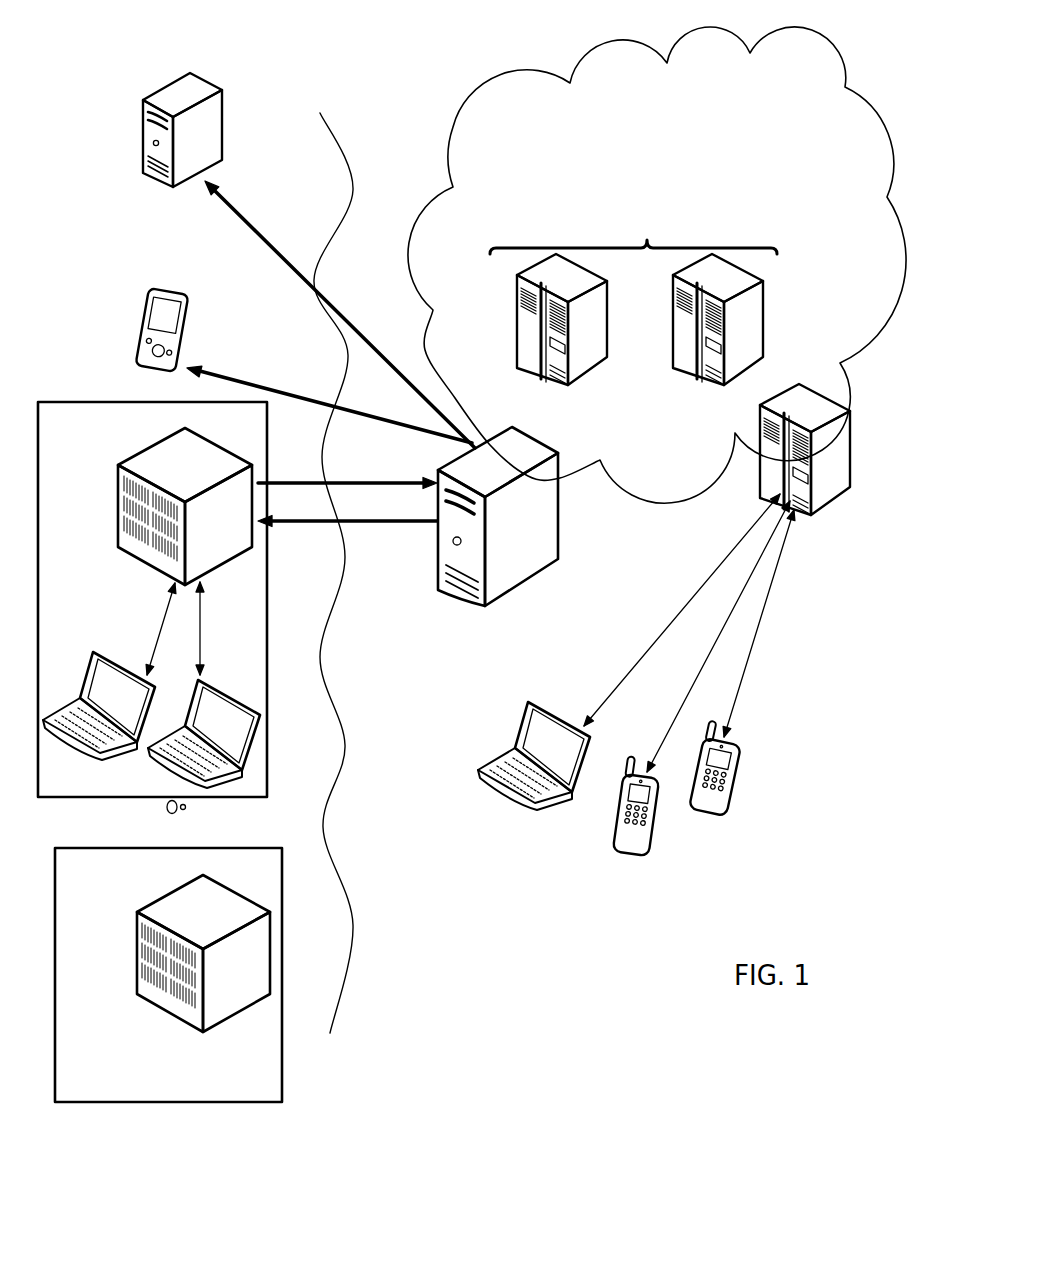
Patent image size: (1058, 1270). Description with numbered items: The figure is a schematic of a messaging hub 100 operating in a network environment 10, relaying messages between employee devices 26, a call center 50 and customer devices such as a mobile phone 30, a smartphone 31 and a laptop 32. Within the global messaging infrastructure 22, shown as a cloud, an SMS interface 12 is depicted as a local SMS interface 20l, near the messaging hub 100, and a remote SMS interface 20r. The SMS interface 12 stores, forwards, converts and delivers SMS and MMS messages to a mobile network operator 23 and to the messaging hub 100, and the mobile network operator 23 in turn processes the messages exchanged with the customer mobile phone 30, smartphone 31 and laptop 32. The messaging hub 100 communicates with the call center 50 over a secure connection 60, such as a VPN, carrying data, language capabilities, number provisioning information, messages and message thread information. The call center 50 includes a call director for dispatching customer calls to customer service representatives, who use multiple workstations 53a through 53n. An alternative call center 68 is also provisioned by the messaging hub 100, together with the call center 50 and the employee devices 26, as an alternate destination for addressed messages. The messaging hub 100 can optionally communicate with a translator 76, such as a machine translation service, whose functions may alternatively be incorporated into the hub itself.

The network environment 10 is at (450, 120).
The SMS interface 12 is at (633, 218).
The SMS interface (local) 20l is at (578, 290).
The SMS interface (remote) 20r is at (708, 290).
The global messaging infrastructure 22 is at (682, 114).
The mobile network operator 23 is at (794, 423).
The employee device 26 is at (181, 291).
The mobile phone 30 is at (736, 742).
The smartphone 31 is at (625, 849).
The laptop 32 is at (553, 700).
The call center 50 is at (55, 444).
The workstation 53a is at (112, 643).
The workstation 53n is at (216, 671).
The secure connection 60 is at (392, 475).
The alternative call center 68 is at (70, 892).
The translator 76 is at (236, 74).
The messaging hub 100 is at (534, 422).